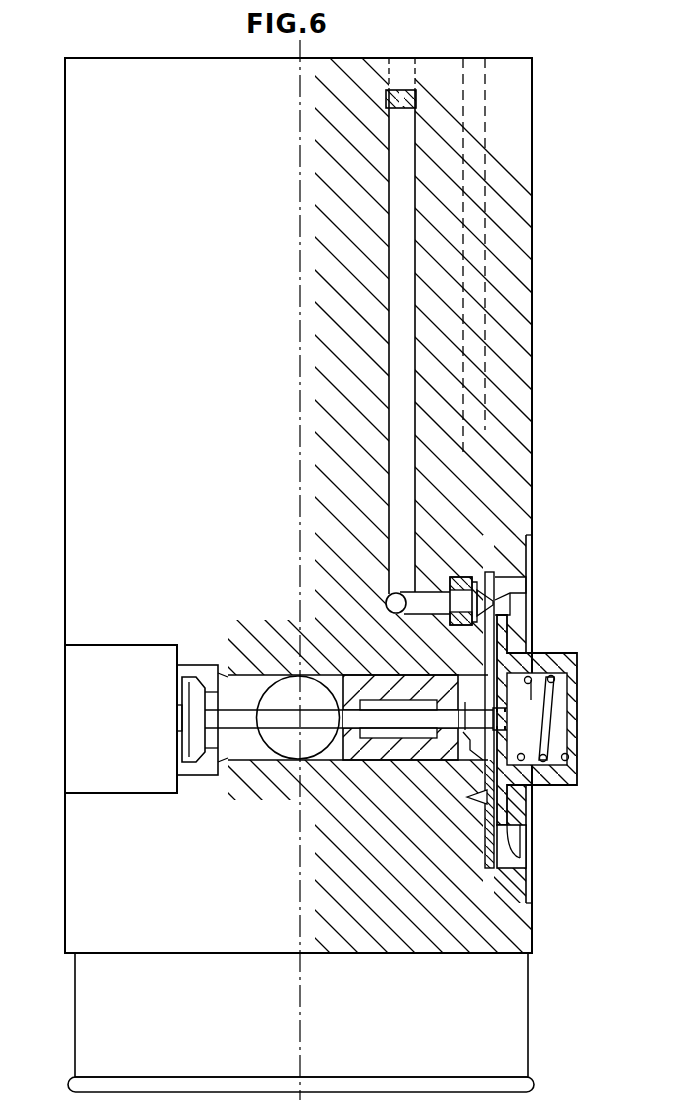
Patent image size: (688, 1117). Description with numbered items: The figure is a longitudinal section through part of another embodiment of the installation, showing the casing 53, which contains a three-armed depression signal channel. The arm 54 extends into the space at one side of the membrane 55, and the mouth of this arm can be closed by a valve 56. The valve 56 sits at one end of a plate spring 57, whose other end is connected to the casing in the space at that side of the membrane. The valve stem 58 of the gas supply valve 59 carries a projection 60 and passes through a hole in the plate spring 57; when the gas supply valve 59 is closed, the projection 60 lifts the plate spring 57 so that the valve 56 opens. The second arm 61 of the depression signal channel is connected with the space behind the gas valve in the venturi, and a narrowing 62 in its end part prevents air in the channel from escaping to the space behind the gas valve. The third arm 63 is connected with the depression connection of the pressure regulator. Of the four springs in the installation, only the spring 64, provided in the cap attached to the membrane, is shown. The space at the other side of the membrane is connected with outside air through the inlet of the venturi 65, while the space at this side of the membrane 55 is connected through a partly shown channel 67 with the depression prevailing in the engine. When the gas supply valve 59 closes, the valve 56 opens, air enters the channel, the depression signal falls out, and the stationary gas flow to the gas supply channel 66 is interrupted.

The casing 53 is at (445, 100).
The arm of the depression signal channel 54 is at (451, 577).
The membrane 55 is at (517, 857).
The valve 56 is at (487, 602).
The plate spring 57 is at (469, 797).
The valve stem 58 is at (270, 715).
The gas supply valve 59 is at (193, 735).
The projection 60 is at (538, 786).
The second arm of the depression signal channel 61 is at (403, 255).
The narrowing 62 is at (415, 90).
The third arm of the depression signal channel 63 is at (388, 596).
The spring 64 is at (554, 680).
The venturi 65 is at (500, 1018).
The gas supply channel 66 is at (97, 690).
The channel 67 is at (477, 306).